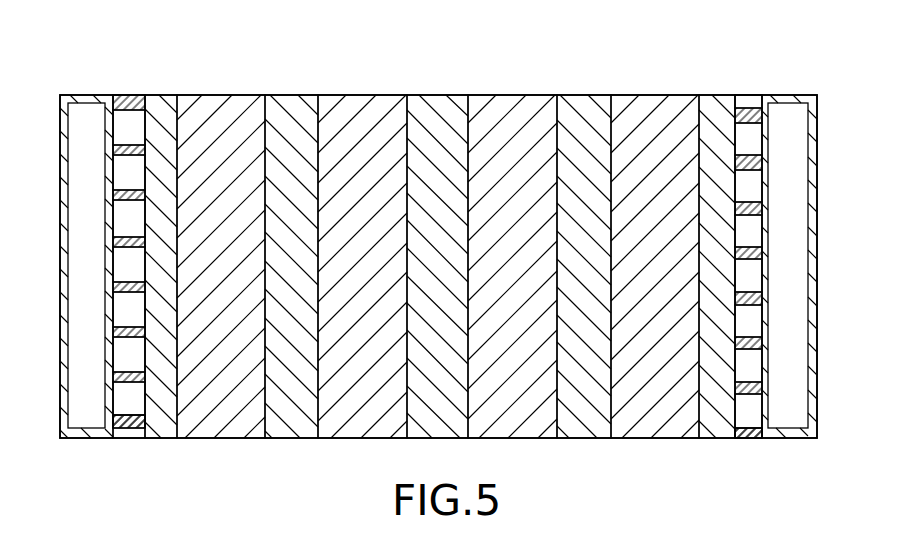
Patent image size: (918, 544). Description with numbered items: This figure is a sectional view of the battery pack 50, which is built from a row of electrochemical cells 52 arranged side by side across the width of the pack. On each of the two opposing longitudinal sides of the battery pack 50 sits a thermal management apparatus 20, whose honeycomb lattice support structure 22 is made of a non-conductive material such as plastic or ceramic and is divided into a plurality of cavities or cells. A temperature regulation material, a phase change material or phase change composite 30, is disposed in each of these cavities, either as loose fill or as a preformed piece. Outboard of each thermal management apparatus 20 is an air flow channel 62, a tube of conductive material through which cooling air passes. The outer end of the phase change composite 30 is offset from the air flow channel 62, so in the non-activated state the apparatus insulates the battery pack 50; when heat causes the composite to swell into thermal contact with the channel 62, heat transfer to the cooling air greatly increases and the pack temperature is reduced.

The thermal management apparatus 20 is at (132, 86).
The honeycomb lattice support structure 22 is at (128, 423).
The phase change composite 30 is at (130, 127).
The battery pack 50 is at (442, 117).
The electrochemical cells 52 is at (222, 107).
The air flow channel 62 is at (75, 97).